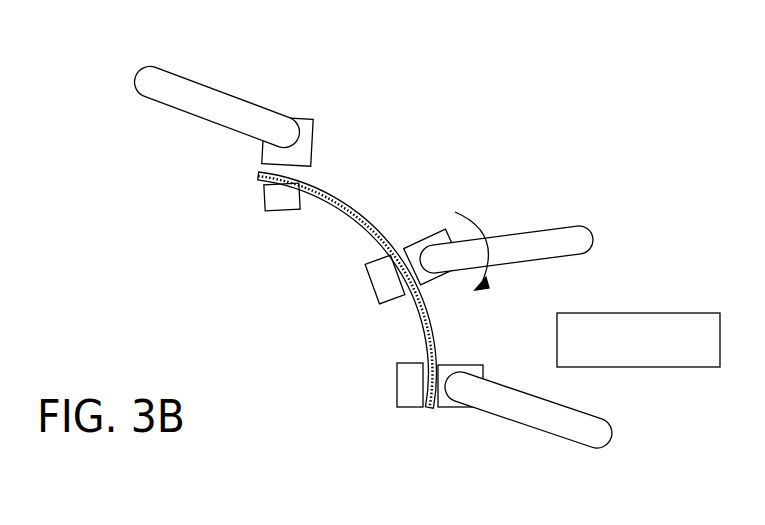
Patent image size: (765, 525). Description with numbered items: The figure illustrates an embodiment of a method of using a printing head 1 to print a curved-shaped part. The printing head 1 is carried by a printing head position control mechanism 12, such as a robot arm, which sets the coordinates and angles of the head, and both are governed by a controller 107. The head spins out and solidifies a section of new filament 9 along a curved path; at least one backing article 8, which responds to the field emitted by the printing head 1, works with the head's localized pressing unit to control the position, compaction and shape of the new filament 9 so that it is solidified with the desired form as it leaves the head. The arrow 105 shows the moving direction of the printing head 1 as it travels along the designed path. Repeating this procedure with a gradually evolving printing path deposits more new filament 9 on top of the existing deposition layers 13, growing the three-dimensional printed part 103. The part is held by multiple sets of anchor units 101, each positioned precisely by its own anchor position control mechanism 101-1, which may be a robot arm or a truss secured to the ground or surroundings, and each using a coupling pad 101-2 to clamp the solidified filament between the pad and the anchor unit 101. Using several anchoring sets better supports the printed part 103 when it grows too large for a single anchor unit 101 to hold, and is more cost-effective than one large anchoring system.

The printing head 1 is at (417, 240).
The backing article 8 is at (380, 285).
The new filament 9 is at (356, 200).
The printing head position control mechanism 12 is at (548, 242).
The existing deposition layers 13 is at (417, 317).
The anchor unit 101 is at (265, 152).
The anchor position control mechanism 101-1 is at (200, 93).
The coupling pad 101-2 is at (262, 198).
The 3D printed part 103 is at (418, 340).
The moving direction of the printing head 105 is at (470, 222).
The controller 107 is at (678, 362).